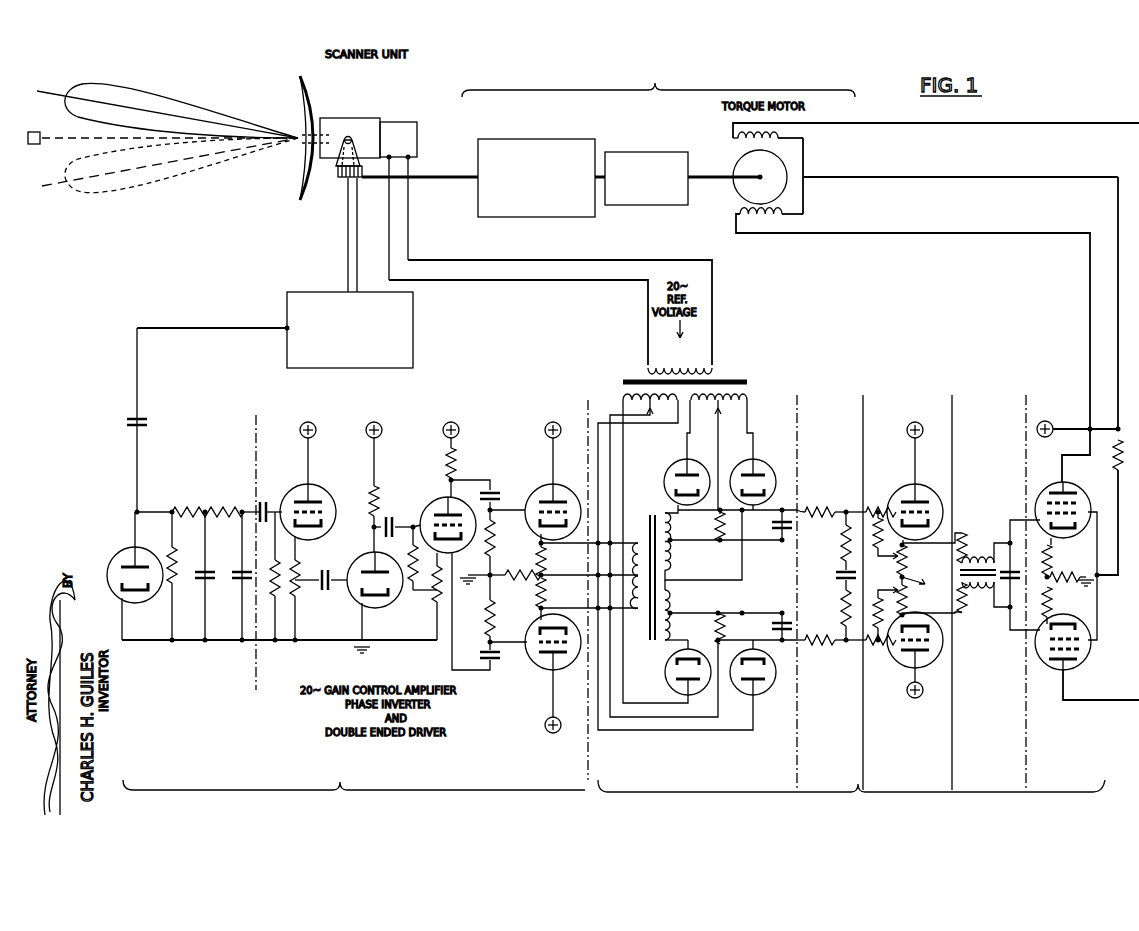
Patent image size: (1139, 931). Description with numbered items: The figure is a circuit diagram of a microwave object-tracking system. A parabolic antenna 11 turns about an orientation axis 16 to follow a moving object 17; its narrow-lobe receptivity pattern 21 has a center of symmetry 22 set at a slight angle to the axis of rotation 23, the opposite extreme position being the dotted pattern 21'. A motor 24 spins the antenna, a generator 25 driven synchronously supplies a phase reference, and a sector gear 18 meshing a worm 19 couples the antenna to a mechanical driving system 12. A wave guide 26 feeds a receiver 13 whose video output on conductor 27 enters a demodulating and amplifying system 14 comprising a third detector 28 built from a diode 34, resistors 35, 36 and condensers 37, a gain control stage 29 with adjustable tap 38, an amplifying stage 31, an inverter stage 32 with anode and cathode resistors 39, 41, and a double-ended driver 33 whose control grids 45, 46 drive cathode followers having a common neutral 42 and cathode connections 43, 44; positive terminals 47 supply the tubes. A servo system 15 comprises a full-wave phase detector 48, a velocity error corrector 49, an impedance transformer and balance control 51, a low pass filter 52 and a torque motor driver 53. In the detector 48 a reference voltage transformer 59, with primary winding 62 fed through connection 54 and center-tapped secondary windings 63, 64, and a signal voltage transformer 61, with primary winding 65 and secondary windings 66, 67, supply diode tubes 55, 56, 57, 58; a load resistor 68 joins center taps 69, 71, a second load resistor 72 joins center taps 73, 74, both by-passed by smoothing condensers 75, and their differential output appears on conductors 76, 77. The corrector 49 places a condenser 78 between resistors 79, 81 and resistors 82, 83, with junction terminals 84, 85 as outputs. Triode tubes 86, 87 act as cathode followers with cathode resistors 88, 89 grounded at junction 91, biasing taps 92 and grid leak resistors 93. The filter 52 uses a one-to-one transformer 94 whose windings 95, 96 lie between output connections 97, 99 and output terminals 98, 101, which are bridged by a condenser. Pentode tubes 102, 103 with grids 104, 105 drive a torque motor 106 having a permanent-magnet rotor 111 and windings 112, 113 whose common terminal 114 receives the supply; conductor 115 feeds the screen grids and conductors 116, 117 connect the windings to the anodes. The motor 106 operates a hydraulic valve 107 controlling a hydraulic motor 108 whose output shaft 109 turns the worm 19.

The antenna 11 is at (336, 81).
The mechanical driving system 12 is at (664, 81).
The radio receiver 13 is at (414, 312).
The demodulating and amplifying system 14 is at (348, 825).
The phase-sensitive control system 15 is at (865, 825).
The orientation axis 16 is at (330, 125).
The moving object 17 is at (44, 144).
The sector gear 18 is at (337, 165).
The worm 19 is at (360, 178).
The narrow-lobe receptivity pattern 21 is at (181, 99).
The dotted receptivity pattern 21' is at (179, 180).
The center of symmetry 22 is at (112, 101).
The axis of rotation 23 is at (75, 138).
The motor 24 is at (376, 120).
The generator 25 is at (410, 122).
The hollow-pipe wave guide 26 is at (347, 235).
The conductor 27 is at (240, 328).
The third detector 28 is at (194, 664).
The gain control stage 29 is at (328, 487).
The amplifying stage 31 is at (386, 613).
The inverter stage 32 is at (425, 504).
The double-ended driver stage 33 is at (541, 685).
The diode 34 is at (126, 553).
The resistor 35 is at (168, 550).
The resistor 36 is at (204, 511).
The condensers 37 is at (212, 570).
The adjustable output tap 38 is at (325, 574).
The resistor 39 is at (446, 462).
The resistor 41 is at (433, 600).
The common neutral 42 is at (548, 578).
The cathode connection 43 is at (549, 556).
The cathode connection 44 is at (550, 609).
The control grid 45 is at (535, 488).
The control grid 46 is at (533, 666).
The positive terminals 47 is at (365, 425).
The full-wave phase detector 48 is at (664, 767).
The velocity error corrector 49 is at (840, 772).
The impedance transformer and balance control 51 is at (914, 789).
The low pass filter 52 is at (999, 759).
The torque motor driver 53 is at (1088, 790).
The connection 54 is at (555, 282).
The diode vacuum tube 55 is at (666, 467).
The diode vacuum tube 56 is at (763, 464).
The diode vacuum tube 57 is at (668, 682).
The diode vacuum tube 58 is at (768, 683).
The reference voltage transformer 59 is at (625, 381).
The signal voltage transformer 61 is at (653, 640).
The primary winding 62 is at (703, 363).
The secondary winding 63 is at (752, 402).
The secondary winding 64 is at (620, 396).
The primary winding 65 is at (640, 536).
The secondary winding 66 is at (660, 508).
The secondary winding 67 is at (658, 655).
The direct current load resistor 68 is at (716, 524).
The center tap 69 is at (730, 455).
The center tap 71 is at (672, 540).
The direct current load resistor 72 is at (716, 627).
The center tap 73 is at (656, 420).
The center tap 74 is at (676, 607).
The smoothing condensers 75 is at (780, 612).
The conductor 76 is at (797, 505).
The conductor 77 is at (800, 650).
The condenser 78 is at (835, 573).
The resistor 79 is at (820, 510).
The resistor 81 is at (841, 538).
The resistor 82 is at (846, 643).
The resistor 83 is at (841, 612).
The junction terminal 84 is at (856, 510).
The junction terminal 85 is at (866, 660).
The triode vacuum tube 86 is at (905, 487).
The triode vacuum tube 87 is at (902, 668).
The cathode resistor 88 is at (908, 550).
The cathode resistor 89 is at (908, 598).
The junction terminal 91 is at (905, 577).
The biasing taps 92 is at (878, 598).
The grid leak resistors 93 is at (878, 512).
The transformer 94 is at (999, 639).
The winding 95 is at (966, 547).
The winding 96 is at (966, 598).
The output connection 97 is at (963, 560).
The filter output terminal 98 is at (1010, 530).
The output connection 99 is at (990, 622).
The output connection 101 is at (1010, 640).
The pentode vacuum tube 102 is at (1073, 484).
The pentode vacuum tube 103 is at (1085, 657).
The control grid 104 is at (1067, 540).
The control grid 105 is at (1058, 590).
The torque motor 106 is at (855, 171).
The hydraulic valve 107 is at (620, 152).
The hydraulic motor 108 is at (505, 139).
The output shaft 109 is at (428, 180).
The permanent-magnet rotor 111 is at (745, 165).
The winding 112 is at (778, 133).
The winding 113 is at (785, 219).
The common terminal 114 is at (805, 178).
The conductor 115 is at (1110, 578).
The conductor 116 is at (1138, 638).
The conductor 117 is at (1062, 456).